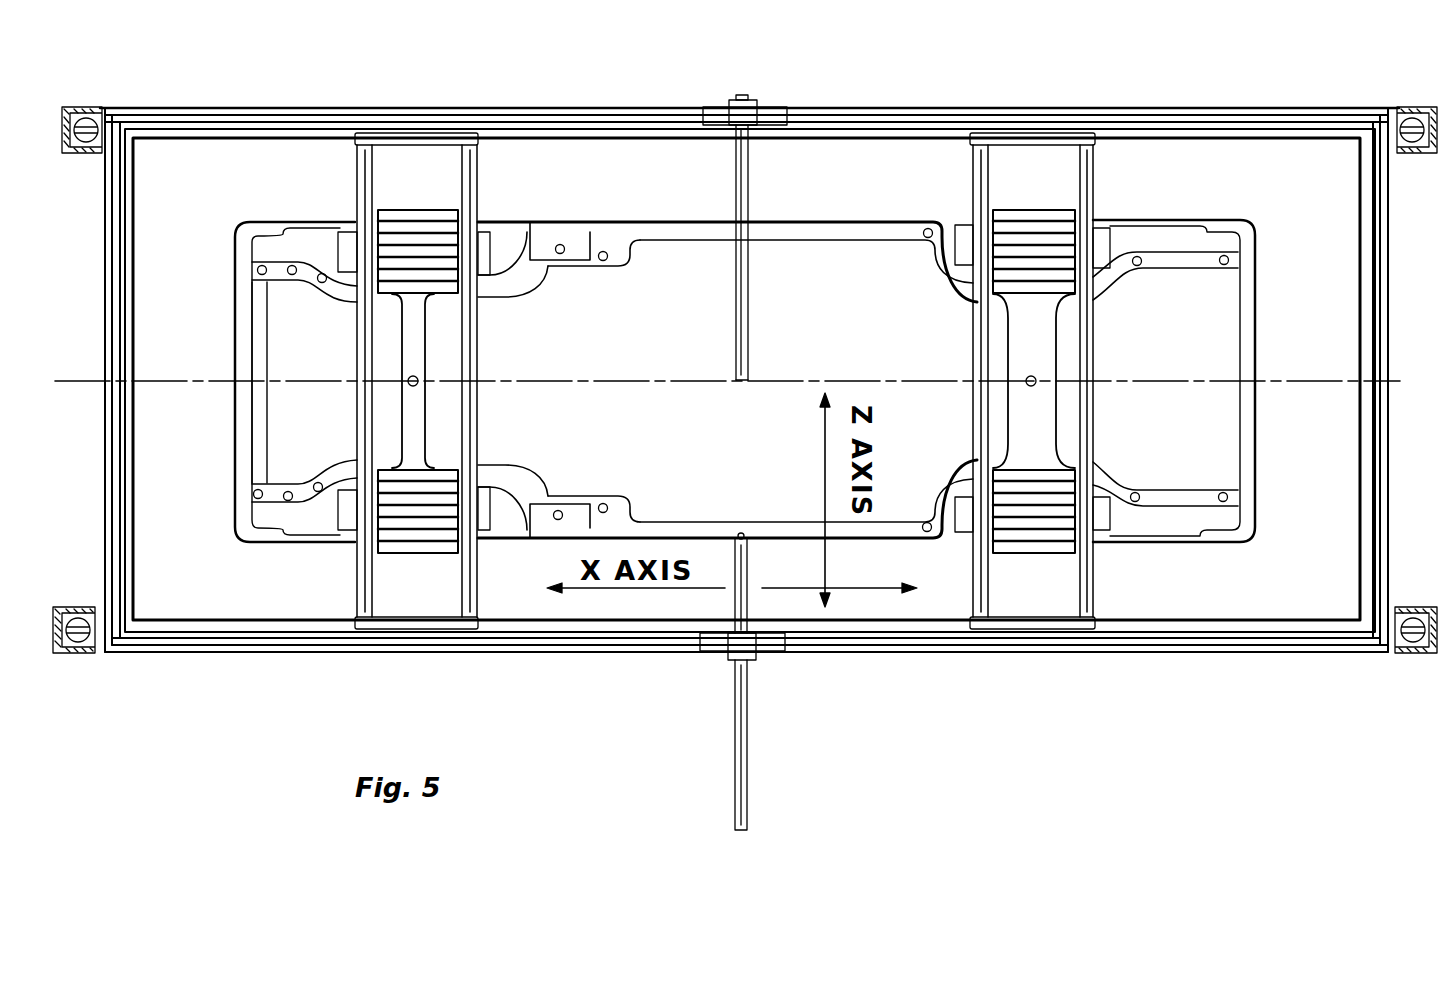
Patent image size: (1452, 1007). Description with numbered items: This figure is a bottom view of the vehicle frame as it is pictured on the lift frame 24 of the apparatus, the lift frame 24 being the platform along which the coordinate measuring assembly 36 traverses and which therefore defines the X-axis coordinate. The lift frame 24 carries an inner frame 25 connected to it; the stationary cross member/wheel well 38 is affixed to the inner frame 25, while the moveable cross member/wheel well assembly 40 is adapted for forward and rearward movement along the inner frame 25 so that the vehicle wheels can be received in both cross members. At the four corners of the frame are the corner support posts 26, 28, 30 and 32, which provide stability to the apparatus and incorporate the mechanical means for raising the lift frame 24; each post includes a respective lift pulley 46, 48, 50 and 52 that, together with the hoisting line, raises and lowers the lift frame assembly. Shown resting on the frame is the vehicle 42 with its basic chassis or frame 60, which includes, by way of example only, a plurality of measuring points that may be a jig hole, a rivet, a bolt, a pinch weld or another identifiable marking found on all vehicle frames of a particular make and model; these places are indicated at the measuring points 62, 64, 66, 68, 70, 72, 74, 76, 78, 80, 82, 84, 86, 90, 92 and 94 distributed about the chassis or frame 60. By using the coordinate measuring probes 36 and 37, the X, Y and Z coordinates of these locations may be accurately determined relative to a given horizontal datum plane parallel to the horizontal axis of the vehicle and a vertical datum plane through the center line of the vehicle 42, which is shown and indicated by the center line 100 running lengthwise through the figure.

The upper lift frame 24 is at (540, 108).
The inner frame 25 is at (604, 140).
The corner support post 26 is at (1380, 108).
The corner support post 28 is at (120, 108).
The corner support post 30 is at (98, 655).
The corner support post 32 is at (1393, 655).
The coordinate measuring probe 36 is at (752, 185).
The coordinate measuring probe 37 is at (759, 664).
The stationary cross member/wheel well 38 is at (428, 133).
The moveable cross member/wheel well assembly 40 is at (1040, 133).
The vehicle 42 is at (682, 222).
The lift pulley 46 is at (1416, 120).
The lift pulley 48 is at (92, 113).
The lift pulley 50 is at (80, 618).
The lift pulley 52 is at (1412, 618).
The chassis or frame 60 is at (626, 265).
The measuring point 62 is at (603, 261).
The measuring point 64 is at (560, 254).
The measuring point 66 is at (323, 284).
The measuring point 68 is at (292, 276).
The measuring point 70 is at (418, 380).
The measuring point 72 is at (608, 494).
The measuring point 74 is at (558, 510).
The measuring point 76 is at (320, 482).
The measuring point 78 is at (289, 490).
The measuring point 80 is at (925, 238).
The measuring point 82 is at (1138, 266).
The measuring point 84 is at (1224, 265).
The measuring point 86 is at (1036, 380).
The measuring point 90 is at (924, 522).
The measuring point 92 is at (1136, 492).
The measuring point 94 is at (1223, 492).
The center line of the vehicle 100 is at (620, 370).